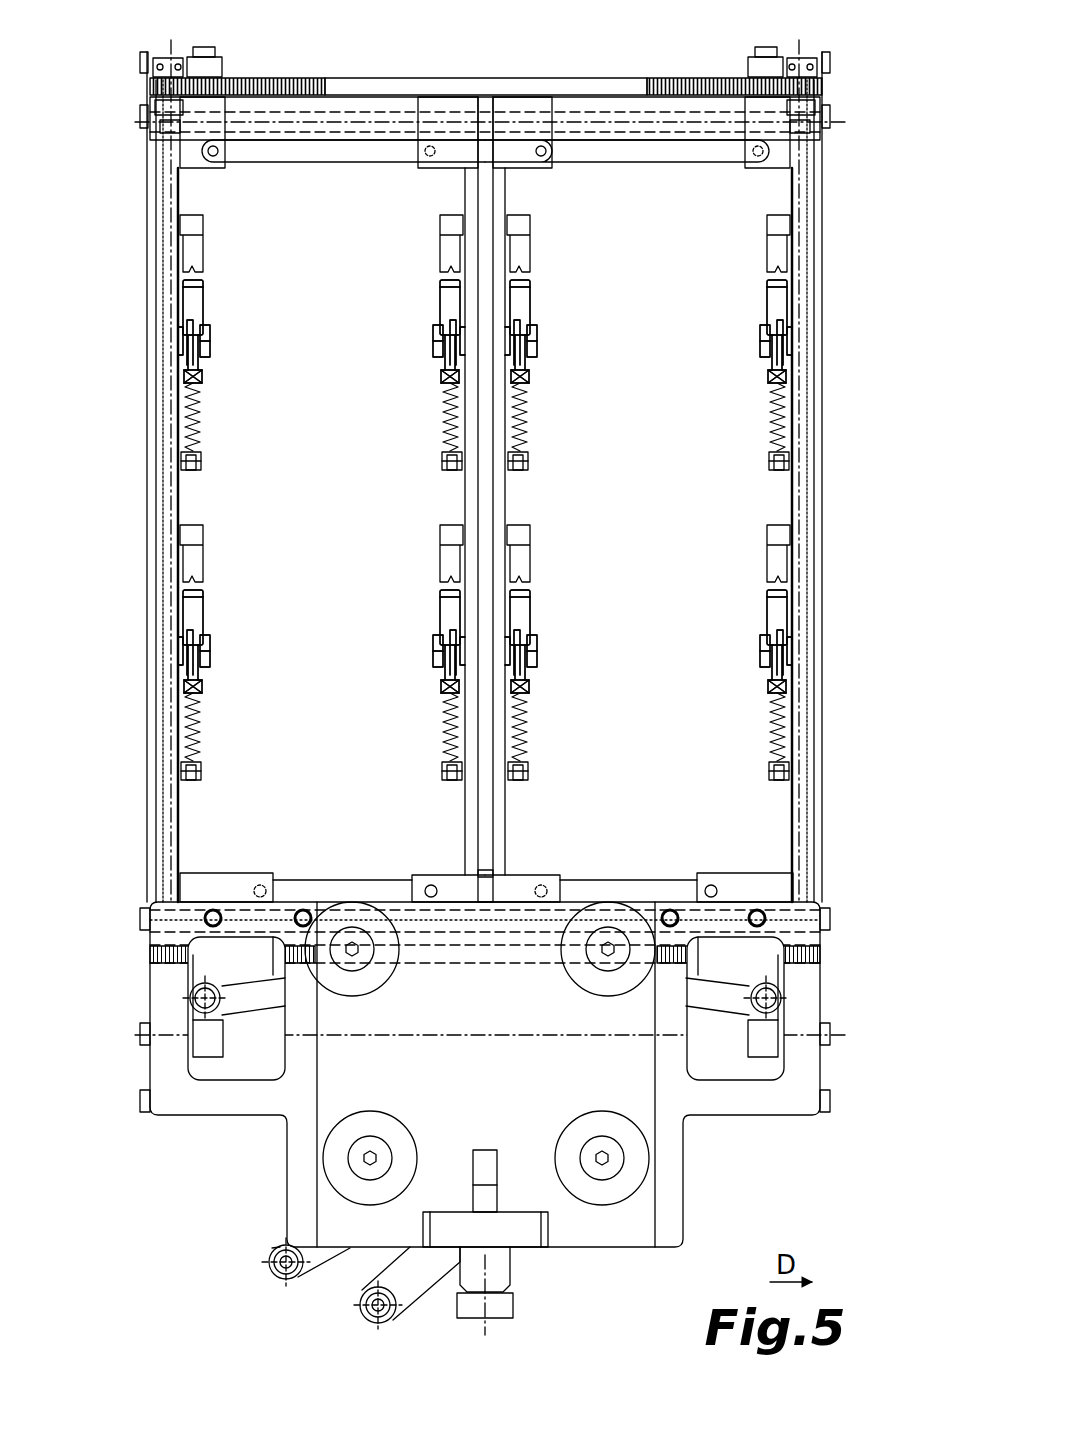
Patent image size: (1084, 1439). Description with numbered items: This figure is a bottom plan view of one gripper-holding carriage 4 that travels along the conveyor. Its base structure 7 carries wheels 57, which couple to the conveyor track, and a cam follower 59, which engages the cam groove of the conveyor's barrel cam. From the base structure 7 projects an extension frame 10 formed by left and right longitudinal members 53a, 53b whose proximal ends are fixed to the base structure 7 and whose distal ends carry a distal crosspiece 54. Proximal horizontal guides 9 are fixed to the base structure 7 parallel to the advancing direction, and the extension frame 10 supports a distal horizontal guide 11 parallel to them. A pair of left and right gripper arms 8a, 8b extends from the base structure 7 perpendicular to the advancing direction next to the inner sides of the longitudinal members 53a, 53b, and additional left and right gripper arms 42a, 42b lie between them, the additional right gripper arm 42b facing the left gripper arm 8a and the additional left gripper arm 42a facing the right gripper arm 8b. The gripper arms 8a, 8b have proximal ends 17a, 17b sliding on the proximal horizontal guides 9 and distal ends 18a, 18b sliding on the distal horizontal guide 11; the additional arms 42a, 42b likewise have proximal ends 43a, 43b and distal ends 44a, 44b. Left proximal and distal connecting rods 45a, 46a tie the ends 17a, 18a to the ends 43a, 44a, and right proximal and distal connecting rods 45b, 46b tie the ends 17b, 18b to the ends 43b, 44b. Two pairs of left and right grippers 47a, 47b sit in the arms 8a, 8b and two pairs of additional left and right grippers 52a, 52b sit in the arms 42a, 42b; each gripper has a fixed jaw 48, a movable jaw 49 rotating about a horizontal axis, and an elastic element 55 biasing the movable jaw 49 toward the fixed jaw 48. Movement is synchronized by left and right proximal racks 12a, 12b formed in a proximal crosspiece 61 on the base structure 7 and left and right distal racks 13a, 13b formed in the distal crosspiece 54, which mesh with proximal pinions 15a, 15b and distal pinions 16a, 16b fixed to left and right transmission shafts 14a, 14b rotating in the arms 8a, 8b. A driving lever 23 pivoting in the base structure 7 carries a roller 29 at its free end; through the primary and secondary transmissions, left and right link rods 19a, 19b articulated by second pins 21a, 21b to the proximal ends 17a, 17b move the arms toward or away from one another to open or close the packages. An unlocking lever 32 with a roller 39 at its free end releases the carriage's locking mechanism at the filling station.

The gripper-holding carriage 4 is at (880, 245).
The base structure 7 is at (590, 1230).
The left gripper arm 8a is at (785, 495).
The right gripper arm 8b is at (190, 495).
The proximal horizontal guides 9 is at (395, 925).
The extension frame 10 is at (845, 507).
The distal horizontal guide 11 is at (350, 117).
The left proximal rack 12a is at (770, 940).
The right proximal rack 12b is at (200, 938).
The left distal rack 13a is at (675, 80).
The right distal rack 13b is at (300, 78).
The left transmission shaft 14a is at (805, 430).
The right transmission shaft 14b is at (165, 430).
The left proximal pinion 15a is at (822, 960).
The right proximal pinion 15b is at (150, 960).
The left distal pinion 16a is at (820, 80).
The right distal pinion 16b is at (150, 80).
The left proximal end 17a is at (752, 900).
The right proximal end 17b is at (222, 900).
The left distal end 18a is at (785, 152).
The right distal end 18b is at (190, 150).
The left link rod 19a is at (715, 1013).
The right link rod 19b is at (257, 1013).
The second pin 21a is at (780, 1000).
The second pin 21b is at (195, 1000).
The driving lever 23 is at (420, 1285).
The roller 29 is at (360, 1318).
The unlocking lever 32 is at (330, 1265).
The roller 39 is at (270, 1265).
The additional left gripper arm 42a is at (460, 495).
The additional right gripper arm 42b is at (510, 495).
The left proximal end 43a is at (440, 878).
The right proximal end 43b is at (530, 878).
The left distal end 44a is at (437, 102).
The right distal end 44b is at (535, 102).
The left proximal connecting rod 45a is at (660, 898).
The right proximal connecting rod 45b is at (305, 898).
The left distal connecting rod 46a is at (650, 155).
The right distal connecting rod 46b is at (318, 155).
The left grippers 47a is at (760, 286).
The right grippers 47b is at (208, 284).
The fixed jaw 48 is at (200, 250).
The movable jaw 49 is at (200, 305).
The additional left grippers 52a is at (430, 286).
The additional right grippers 52b is at (534, 286).
The left longitudinal member 53a is at (810, 632).
The right longitudinal member 53b is at (160, 632).
The distal crosspiece 54 is at (625, 82).
The elastic element 55 is at (200, 415).
The wheels 57 is at (352, 990).
The cam follower 59 is at (512, 1310).
The proximal crosspiece 61 is at (540, 955).